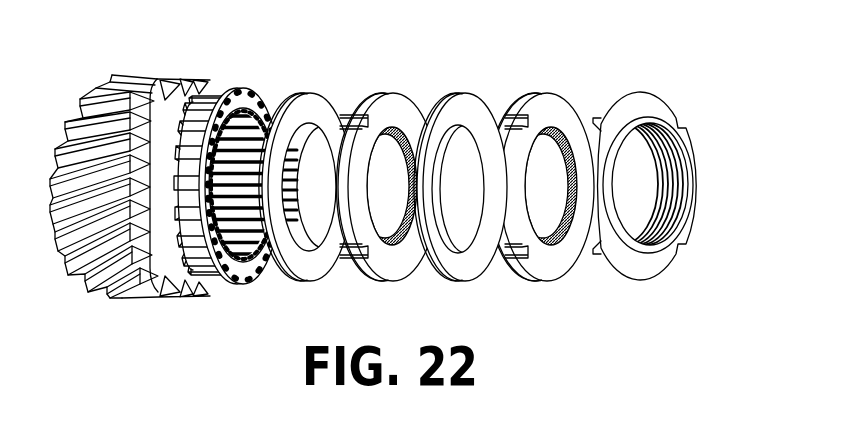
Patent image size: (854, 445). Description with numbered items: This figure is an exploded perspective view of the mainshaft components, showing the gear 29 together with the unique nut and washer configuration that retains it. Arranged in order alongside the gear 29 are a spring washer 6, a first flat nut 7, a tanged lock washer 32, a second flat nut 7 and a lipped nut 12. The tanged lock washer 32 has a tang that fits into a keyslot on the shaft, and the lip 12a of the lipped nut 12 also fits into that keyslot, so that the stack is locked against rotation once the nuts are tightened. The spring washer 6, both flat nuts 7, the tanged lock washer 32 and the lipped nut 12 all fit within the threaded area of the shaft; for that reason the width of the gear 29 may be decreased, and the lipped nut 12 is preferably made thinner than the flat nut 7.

The gear 29 is at (295, 74).
The spring washer 6 is at (323, 112).
The flat nut 7 is at (552, 108).
The tanged lock washer 32 is at (465, 105).
The lipped nut 12 is at (663, 176).
The lip 12a is at (622, 236).